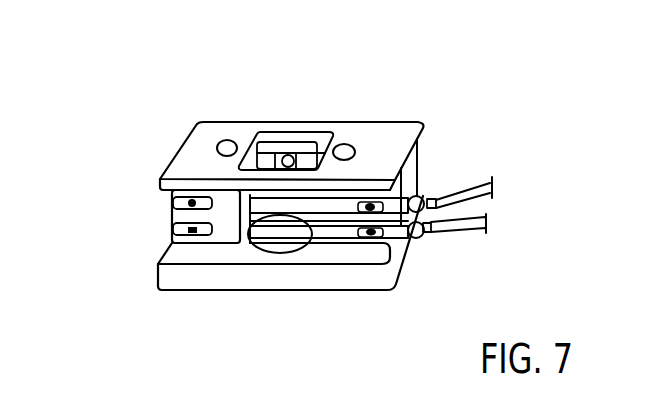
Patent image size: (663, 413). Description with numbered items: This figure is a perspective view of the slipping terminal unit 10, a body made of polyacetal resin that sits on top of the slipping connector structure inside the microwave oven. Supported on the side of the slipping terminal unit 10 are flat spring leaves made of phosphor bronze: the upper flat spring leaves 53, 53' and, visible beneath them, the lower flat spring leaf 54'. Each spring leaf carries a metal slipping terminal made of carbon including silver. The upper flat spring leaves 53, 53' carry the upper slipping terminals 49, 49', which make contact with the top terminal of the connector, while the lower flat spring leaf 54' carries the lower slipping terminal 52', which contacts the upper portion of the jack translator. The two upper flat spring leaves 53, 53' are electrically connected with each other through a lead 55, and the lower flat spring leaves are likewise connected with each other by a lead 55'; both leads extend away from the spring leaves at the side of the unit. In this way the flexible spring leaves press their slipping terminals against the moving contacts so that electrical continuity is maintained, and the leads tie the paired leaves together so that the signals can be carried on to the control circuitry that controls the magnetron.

The slipping terminal unit 10 is at (185, 158).
The upper slipping terminal 49 is at (312, 121).
The upper slipping terminal 49' is at (176, 222).
The lower slipping terminal 52' is at (255, 275).
The upper flat spring leaf 53 is at (286, 117).
The upper flat spring leaf 53' is at (381, 168).
The lower flat spring leaf 54' is at (358, 271).
The lead 55 is at (480, 208).
The lead 55' is at (472, 248).